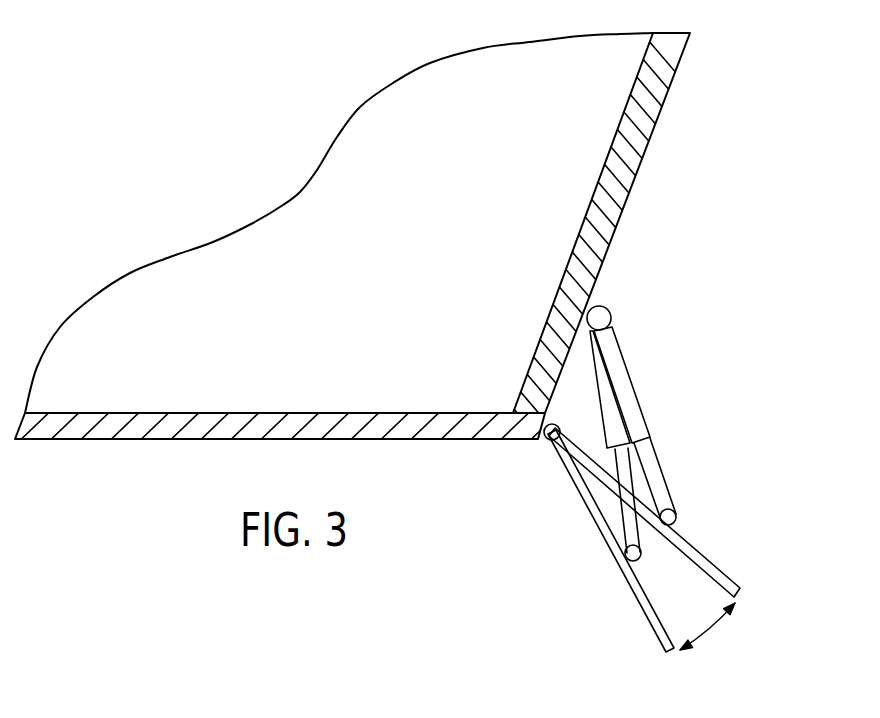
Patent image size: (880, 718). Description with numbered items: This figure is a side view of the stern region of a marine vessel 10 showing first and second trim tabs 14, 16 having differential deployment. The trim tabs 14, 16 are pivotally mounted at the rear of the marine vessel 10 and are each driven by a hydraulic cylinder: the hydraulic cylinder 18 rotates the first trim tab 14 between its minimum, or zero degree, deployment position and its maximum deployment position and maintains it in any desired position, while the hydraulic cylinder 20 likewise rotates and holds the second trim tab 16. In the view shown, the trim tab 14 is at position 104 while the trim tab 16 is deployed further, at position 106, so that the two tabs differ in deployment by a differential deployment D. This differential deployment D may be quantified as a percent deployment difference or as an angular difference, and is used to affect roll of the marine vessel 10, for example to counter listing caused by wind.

The marine vessel 10 is at (298, 155).
The first trim tab 14 is at (697, 548).
The second trim tab 16 is at (637, 602).
The hydraulic cylinder 18 is at (626, 361).
The hydraulic cylinder 20 is at (595, 389).
The position 104 is at (688, 532).
The position 106 is at (607, 548).
The differential deployment D is at (713, 637).